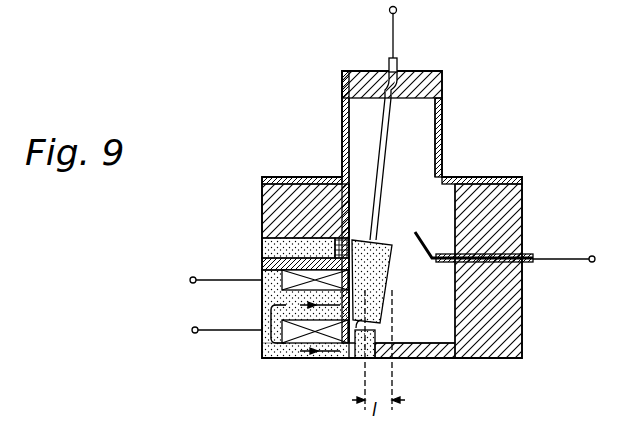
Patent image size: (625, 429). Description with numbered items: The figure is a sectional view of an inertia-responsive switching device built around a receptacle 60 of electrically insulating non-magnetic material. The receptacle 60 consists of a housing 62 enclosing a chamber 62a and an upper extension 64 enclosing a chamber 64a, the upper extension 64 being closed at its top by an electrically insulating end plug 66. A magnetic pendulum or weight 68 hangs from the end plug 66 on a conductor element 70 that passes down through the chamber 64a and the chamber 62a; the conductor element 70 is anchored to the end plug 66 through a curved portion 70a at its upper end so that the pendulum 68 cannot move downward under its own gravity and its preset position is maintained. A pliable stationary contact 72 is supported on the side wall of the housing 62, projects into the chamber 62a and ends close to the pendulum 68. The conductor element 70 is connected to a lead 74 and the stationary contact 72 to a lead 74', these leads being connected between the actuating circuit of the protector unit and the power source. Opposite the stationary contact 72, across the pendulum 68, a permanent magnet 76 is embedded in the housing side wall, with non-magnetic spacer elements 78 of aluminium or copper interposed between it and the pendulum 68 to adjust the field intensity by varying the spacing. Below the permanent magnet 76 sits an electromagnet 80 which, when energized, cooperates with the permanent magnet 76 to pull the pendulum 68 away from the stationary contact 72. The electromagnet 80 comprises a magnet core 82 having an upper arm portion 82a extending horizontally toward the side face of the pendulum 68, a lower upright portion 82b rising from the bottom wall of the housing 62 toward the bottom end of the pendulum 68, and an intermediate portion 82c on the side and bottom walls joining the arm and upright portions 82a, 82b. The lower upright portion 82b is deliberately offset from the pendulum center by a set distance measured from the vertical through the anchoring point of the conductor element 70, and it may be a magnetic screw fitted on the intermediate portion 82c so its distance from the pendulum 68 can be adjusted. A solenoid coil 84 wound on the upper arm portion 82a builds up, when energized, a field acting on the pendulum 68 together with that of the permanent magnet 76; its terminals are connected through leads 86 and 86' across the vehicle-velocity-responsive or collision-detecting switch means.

The receptacle 60 is at (530, 178).
The housing 62 is at (520, 302).
The chamber 62a is at (465, 352).
The upper extension 64 is at (444, 118).
The chamber 64a is at (440, 126).
The end plug 66 is at (444, 80).
The magnetic pendulum 68 is at (380, 290).
The conductor element 70 is at (385, 118).
The curved portion 70a is at (410, 88).
The stationary contact 72 is at (428, 242).
The lead 74 is at (368, 40).
The lead 74' is at (564, 242).
The permanent magnet 76 is at (268, 252).
The non-magnetic spacer elements 78 is at (342, 242).
The electromagnet 80 is at (232, 308).
The magnet core 82 is at (301, 368).
The upper arm portion 82a is at (306, 300).
The lower upright portion 82b is at (362, 345).
The intermediate portion 82c is at (266, 346).
The solenoid coil 84 is at (292, 345).
The lead 86 is at (219, 265).
The lead 86' is at (217, 353).